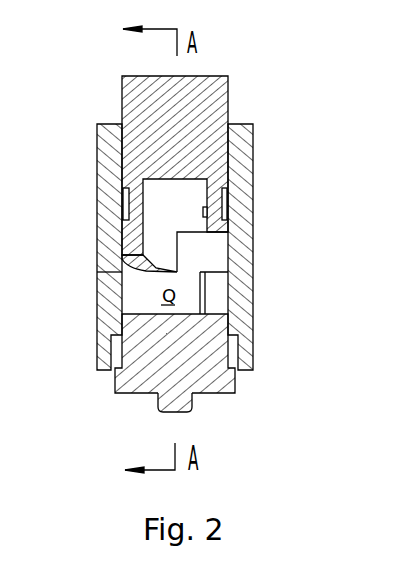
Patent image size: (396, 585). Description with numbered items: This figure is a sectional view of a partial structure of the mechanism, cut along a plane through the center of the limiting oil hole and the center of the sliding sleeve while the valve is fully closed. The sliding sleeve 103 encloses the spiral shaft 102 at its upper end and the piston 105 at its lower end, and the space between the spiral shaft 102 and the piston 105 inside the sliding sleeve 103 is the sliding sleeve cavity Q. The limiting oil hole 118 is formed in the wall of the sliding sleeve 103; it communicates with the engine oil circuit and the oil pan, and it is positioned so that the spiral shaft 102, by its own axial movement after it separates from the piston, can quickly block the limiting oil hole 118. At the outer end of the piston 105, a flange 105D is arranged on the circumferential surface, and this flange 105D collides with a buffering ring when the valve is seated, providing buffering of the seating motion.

The spiral shaft 102 is at (222, 91).
The sliding sleeve 103 is at (240, 148).
The limiting oil hole 118 is at (122, 260).
The piston 105 is at (218, 321).
The flange 105D is at (236, 382).